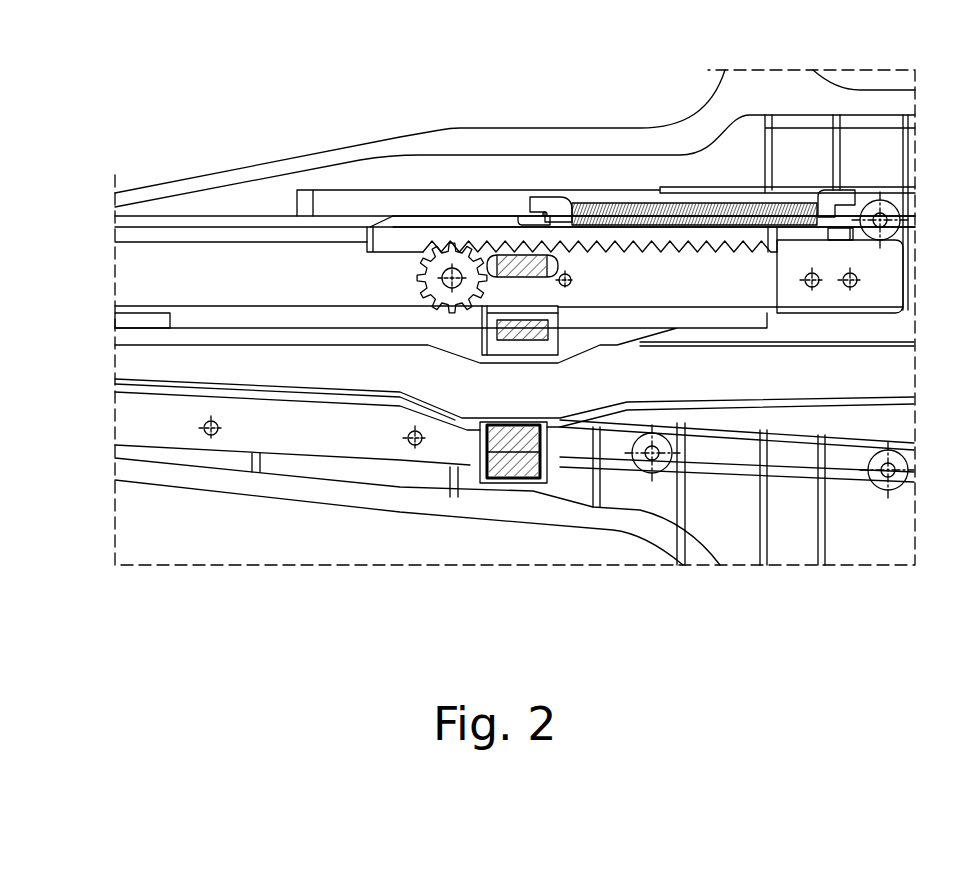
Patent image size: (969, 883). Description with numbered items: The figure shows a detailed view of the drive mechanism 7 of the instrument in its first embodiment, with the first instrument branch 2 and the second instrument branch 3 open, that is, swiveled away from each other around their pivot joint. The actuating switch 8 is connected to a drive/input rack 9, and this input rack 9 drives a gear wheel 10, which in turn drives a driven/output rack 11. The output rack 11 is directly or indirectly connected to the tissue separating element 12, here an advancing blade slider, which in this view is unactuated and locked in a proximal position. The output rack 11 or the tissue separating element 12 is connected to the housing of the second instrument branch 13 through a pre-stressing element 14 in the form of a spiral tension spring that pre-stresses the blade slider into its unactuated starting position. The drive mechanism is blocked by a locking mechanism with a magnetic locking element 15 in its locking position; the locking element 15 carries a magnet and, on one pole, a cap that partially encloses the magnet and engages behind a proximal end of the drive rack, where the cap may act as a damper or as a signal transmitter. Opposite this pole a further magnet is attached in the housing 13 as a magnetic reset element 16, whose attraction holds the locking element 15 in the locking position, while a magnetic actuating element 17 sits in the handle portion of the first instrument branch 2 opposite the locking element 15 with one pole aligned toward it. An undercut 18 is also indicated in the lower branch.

The first instrument branch 2 is at (568, 493).
The second instrument branch 3 is at (650, 143).
The drive mechanism 7 is at (98, 278).
The actuating switch 8 is at (145, 322).
The drive/input rack 9 is at (358, 327).
The gear wheel 10 is at (430, 254).
The driven/output rack 11 is at (515, 235).
The tissue separating element/blade slider 12 is at (470, 223).
The housing of the second instrument branch 13 is at (515, 161).
The pre-stressing element/tension spring 14 is at (655, 220).
The magnetic locking element 15 is at (558, 322).
The magnetic reset element 16 is at (607, 255).
The magnetic actuating element 17 is at (523, 343).
The undercut 18 is at (523, 480).